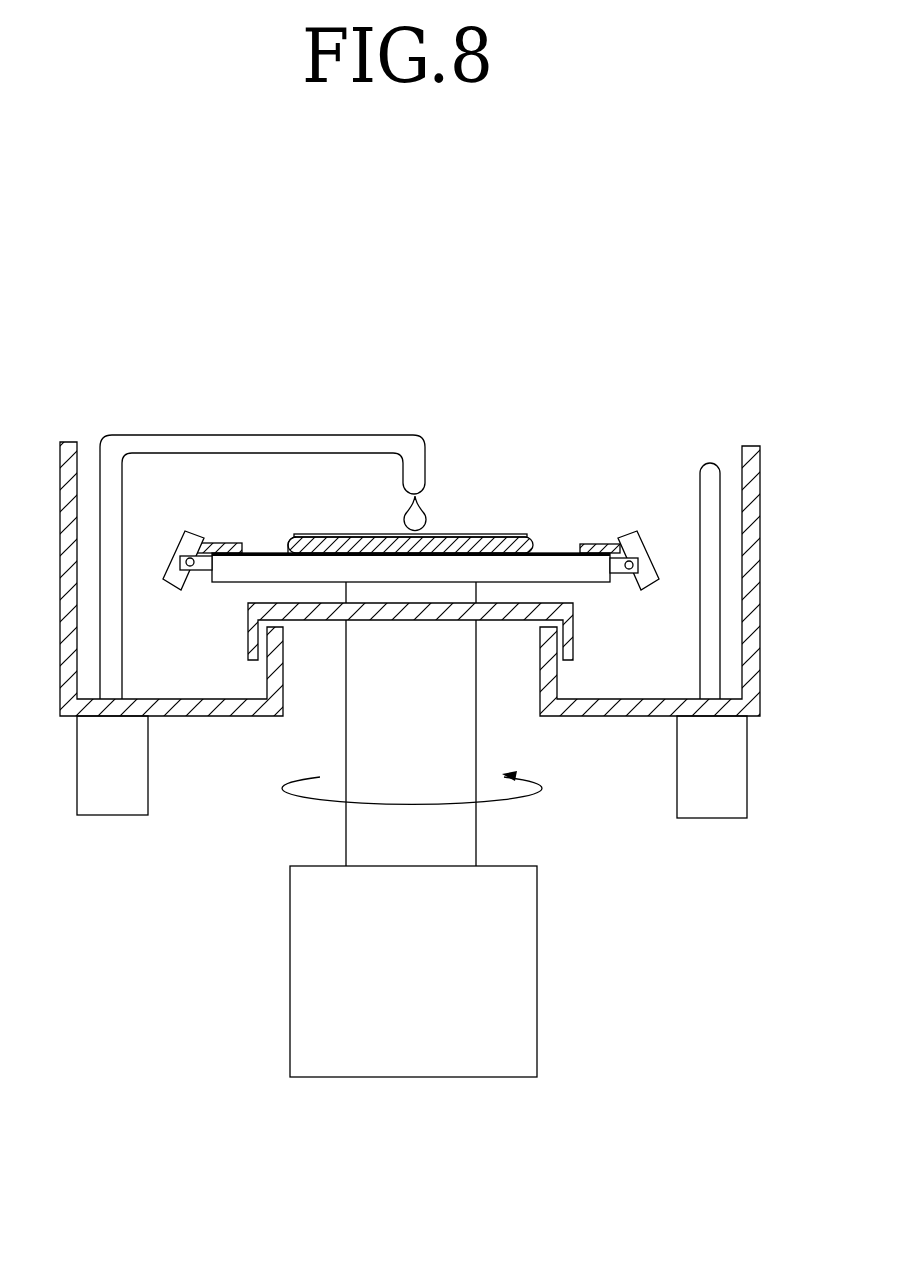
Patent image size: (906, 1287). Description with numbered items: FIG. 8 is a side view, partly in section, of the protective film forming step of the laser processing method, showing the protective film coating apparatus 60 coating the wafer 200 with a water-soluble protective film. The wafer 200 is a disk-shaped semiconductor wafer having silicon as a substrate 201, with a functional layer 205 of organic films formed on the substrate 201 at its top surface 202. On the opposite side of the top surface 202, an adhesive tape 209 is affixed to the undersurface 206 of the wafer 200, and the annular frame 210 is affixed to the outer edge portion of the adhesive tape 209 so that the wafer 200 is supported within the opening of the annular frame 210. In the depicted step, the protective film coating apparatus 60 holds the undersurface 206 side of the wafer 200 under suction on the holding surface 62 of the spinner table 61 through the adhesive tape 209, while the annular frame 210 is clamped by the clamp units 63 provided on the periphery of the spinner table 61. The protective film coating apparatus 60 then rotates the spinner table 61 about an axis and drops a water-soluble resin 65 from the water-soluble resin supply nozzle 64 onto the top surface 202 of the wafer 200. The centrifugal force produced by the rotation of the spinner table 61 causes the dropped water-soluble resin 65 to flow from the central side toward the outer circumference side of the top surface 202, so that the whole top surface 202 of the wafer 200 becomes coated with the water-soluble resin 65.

The protective film coating apparatus 60 is at (312, 326).
The spinner table 61 is at (592, 585).
The holding surface 62 is at (515, 558).
The clamp units 63 is at (647, 593).
The water-soluble resin supply nozzle 64 is at (345, 435).
The water-soluble resin 65 is at (436, 485).
The wafer 200 is at (417, 471).
The substrate 201 is at (493, 545).
The top surface 202 is at (465, 535).
The functional layer 205 is at (313, 532).
The undersurface 206 is at (307, 560).
The adhesive tape 209 is at (562, 553).
The annular frame 210 is at (602, 543).